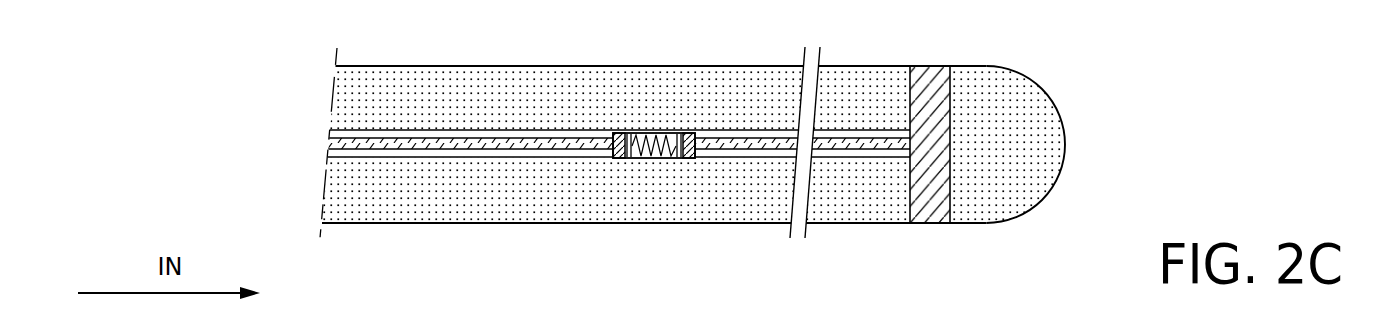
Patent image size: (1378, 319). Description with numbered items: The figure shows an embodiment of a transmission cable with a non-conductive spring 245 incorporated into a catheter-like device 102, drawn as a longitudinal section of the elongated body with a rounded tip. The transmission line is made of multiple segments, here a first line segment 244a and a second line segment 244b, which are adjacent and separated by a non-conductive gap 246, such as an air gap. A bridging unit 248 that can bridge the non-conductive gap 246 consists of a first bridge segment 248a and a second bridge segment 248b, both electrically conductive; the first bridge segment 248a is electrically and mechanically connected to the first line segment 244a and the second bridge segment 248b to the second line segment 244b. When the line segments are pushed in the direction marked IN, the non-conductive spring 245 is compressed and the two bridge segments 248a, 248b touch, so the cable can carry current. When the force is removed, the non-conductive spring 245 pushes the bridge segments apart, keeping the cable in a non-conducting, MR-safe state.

The catheter-like device 102 is at (393, 78).
The first line segment 244a is at (390, 148).
The second line segment 244b is at (742, 150).
The non-conductive spring 245 is at (637, 155).
The non-conductive gap 246 is at (653, 158).
The bridging unit 248 is at (639, 188).
The first bridge segment 248a is at (643, 158).
The second bridge segment 248b is at (673, 158).